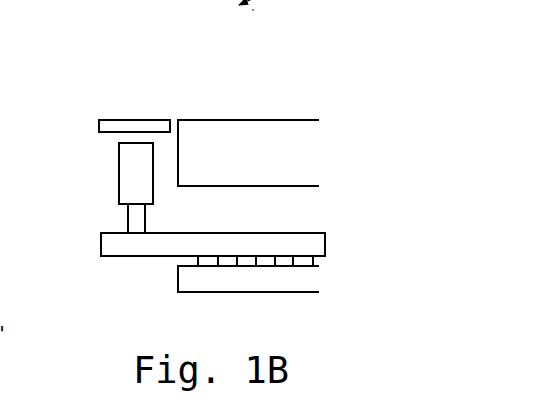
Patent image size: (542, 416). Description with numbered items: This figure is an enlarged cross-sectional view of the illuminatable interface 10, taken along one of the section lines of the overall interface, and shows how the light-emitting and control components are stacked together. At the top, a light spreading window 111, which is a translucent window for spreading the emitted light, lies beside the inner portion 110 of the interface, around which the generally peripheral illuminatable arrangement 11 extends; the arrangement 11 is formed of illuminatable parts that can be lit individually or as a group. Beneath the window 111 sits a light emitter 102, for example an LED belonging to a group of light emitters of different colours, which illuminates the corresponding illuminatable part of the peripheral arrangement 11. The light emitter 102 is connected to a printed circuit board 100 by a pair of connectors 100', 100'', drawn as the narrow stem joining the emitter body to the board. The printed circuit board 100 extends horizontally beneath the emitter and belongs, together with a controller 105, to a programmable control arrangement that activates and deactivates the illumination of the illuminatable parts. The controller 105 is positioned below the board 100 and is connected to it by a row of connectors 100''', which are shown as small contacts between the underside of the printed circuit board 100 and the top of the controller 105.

The device 10 is at (165, 59).
The peripheral illuminatable arrangement 11 is at (77, 98).
The light spreading window 111 is at (140, 120).
The inner portion 110 is at (232, 120).
The light emitter 102 is at (119, 167).
The connector 100' is at (179, 215).
The connector 100'' is at (95, 212).
The printed circuit board 100 is at (213, 270).
The connectors 100''' is at (270, 294).
The controller 105 is at (238, 277).